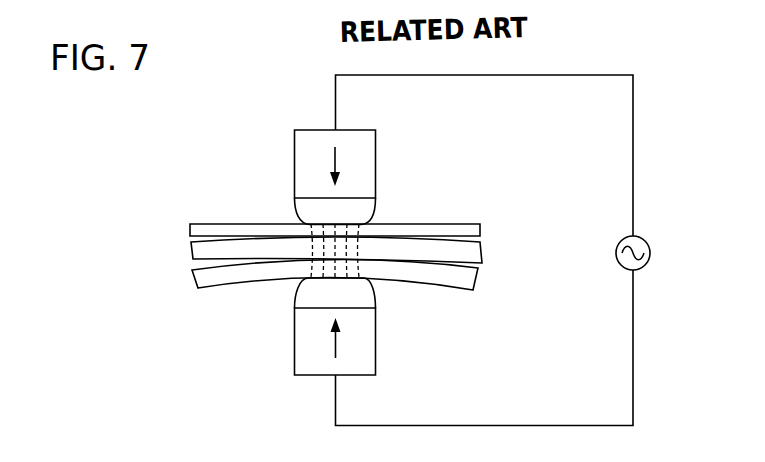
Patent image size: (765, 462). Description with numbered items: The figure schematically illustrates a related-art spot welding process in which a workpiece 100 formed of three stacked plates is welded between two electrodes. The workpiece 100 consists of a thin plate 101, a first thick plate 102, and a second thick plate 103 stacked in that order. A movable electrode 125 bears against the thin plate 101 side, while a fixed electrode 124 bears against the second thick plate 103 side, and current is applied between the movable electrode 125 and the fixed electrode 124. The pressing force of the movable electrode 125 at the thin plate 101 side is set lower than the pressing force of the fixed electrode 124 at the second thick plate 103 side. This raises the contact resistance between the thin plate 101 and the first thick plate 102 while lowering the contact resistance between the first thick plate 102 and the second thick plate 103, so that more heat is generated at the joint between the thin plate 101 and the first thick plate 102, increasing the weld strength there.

The workpiece 100 is at (294, 231).
The thin plate 101 is at (190, 229).
The first thick plate 102 is at (197, 250).
The second thick plate 103 is at (198, 278).
The fixed electrode 124 is at (303, 340).
The movable electrode 125 is at (303, 165).